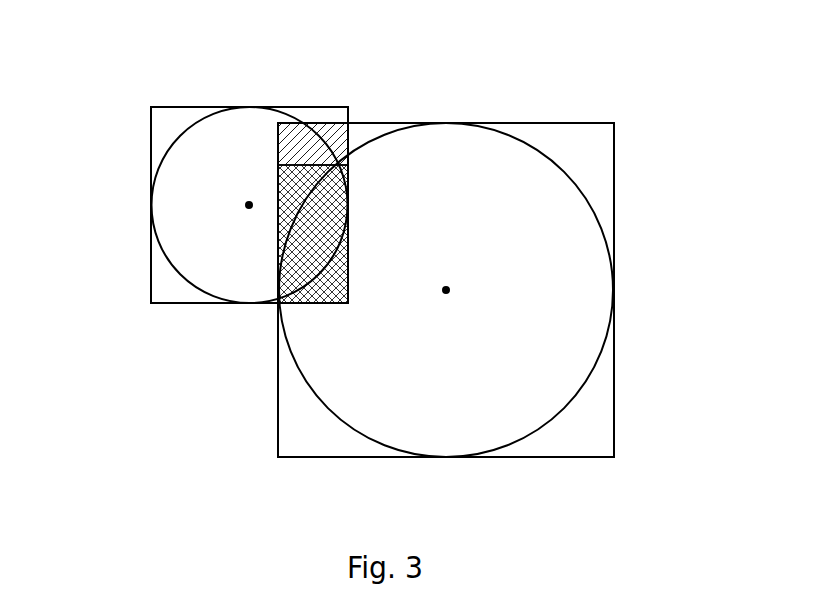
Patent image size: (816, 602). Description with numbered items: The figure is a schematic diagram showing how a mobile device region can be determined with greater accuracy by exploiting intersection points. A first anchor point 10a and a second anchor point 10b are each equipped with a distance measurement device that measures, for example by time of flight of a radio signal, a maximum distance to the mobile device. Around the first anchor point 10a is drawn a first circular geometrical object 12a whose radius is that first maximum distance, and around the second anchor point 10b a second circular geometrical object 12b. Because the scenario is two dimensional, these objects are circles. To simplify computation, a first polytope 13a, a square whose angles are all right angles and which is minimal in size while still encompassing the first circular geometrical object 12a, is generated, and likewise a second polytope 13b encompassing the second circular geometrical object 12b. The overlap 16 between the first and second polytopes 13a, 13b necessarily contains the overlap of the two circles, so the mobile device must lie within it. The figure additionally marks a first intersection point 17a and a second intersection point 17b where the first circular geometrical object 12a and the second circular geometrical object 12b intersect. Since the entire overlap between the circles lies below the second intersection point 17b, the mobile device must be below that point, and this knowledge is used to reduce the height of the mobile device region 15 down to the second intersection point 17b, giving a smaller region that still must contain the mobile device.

The first anchor point 10a is at (249, 205).
The second anchor point 10b is at (446, 290).
The first circular geometrical object 12a is at (168, 138).
The second circular geometrical object 12b is at (572, 402).
The first polytope 13a is at (175, 107).
The second polytope 13b is at (615, 180).
The mobile device region 15 is at (307, 233).
The overlap 16 is at (333, 140).
The first intersection point 17a is at (281, 302).
The second intersection point 17b is at (338, 162).